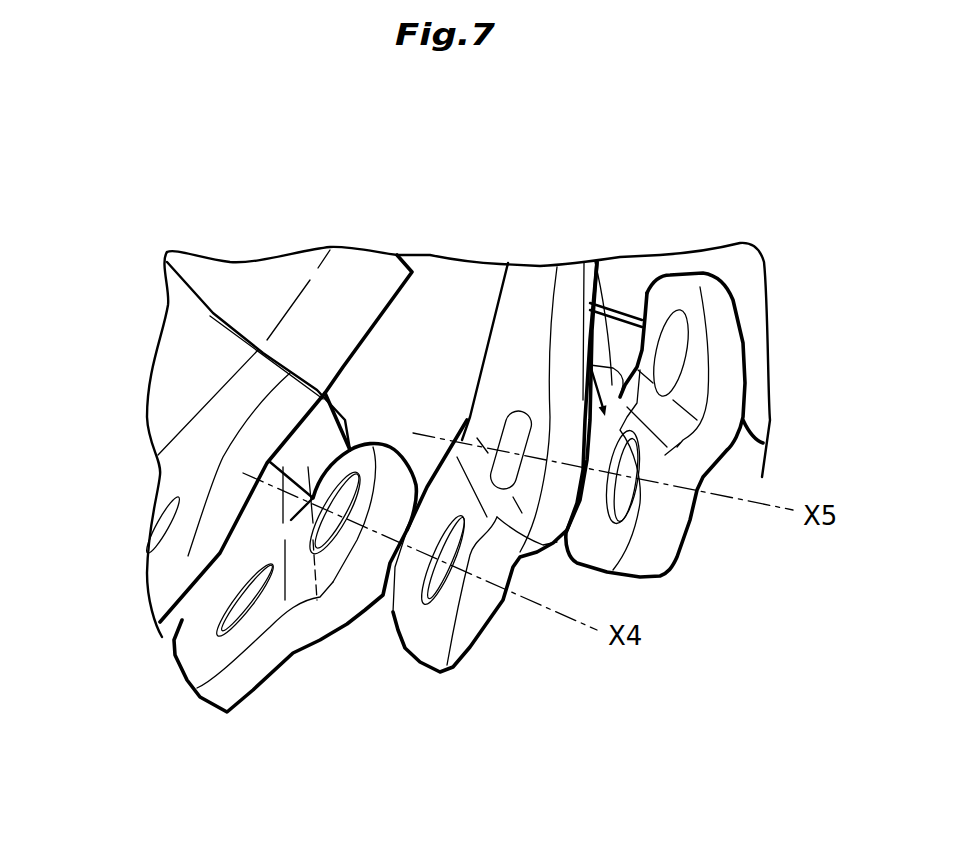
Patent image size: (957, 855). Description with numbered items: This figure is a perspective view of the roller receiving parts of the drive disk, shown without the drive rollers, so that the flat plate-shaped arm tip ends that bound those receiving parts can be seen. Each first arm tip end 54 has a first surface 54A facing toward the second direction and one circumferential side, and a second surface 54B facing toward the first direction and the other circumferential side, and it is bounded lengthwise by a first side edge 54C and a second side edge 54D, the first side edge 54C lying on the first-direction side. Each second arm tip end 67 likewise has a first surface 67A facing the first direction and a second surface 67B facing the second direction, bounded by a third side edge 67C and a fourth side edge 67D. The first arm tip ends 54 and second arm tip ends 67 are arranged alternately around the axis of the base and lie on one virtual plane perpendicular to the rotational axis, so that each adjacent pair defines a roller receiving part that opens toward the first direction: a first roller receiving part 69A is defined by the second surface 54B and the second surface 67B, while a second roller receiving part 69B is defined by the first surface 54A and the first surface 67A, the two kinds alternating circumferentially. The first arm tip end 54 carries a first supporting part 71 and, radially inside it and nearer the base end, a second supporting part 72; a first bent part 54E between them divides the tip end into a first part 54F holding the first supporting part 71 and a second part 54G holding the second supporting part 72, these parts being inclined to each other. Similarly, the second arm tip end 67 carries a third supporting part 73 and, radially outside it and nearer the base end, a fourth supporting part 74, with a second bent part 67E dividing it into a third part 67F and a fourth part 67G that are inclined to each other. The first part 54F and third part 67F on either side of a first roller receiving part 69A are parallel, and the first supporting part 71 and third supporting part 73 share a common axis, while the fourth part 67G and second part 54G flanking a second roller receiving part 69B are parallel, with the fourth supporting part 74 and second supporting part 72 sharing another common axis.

The first arm tip end 54 is at (437, 684).
The first surface 54A is at (477, 643).
The second surface 54B is at (400, 640).
The first side edge 54C is at (563, 357).
The second side edge 54D is at (490, 352).
The first bent part 54E is at (517, 543).
The first part 54F is at (457, 667).
The second part 54G is at (492, 378).
The second arm tip end 67 is at (722, 266).
The first surface 67A is at (610, 557).
The second surface 67B is at (372, 595).
The third side edge 67C is at (730, 367).
The fourth side edge 67D is at (647, 297).
The second bent part 67E is at (720, 470).
The third part 67F is at (352, 450).
The fourth part 67G is at (593, 553).
The first roller receiving part 69A is at (393, 605).
The second roller receiving part 69B is at (584, 263).
The first supporting part 71 is at (396, 574).
The second supporting part 72 is at (510, 430).
The third supporting part 73 is at (323, 530).
The fourth supporting part 74 is at (613, 493).